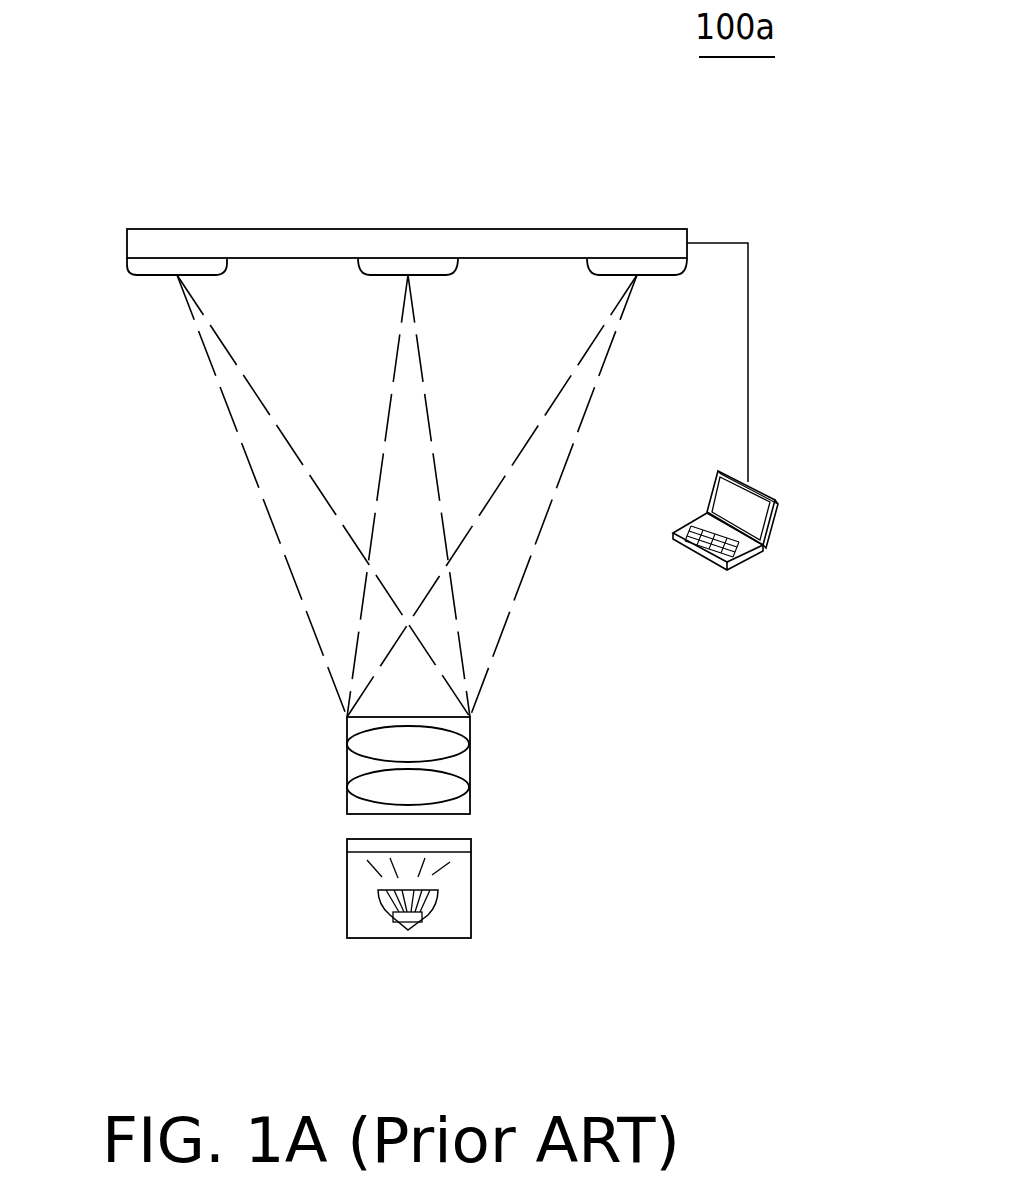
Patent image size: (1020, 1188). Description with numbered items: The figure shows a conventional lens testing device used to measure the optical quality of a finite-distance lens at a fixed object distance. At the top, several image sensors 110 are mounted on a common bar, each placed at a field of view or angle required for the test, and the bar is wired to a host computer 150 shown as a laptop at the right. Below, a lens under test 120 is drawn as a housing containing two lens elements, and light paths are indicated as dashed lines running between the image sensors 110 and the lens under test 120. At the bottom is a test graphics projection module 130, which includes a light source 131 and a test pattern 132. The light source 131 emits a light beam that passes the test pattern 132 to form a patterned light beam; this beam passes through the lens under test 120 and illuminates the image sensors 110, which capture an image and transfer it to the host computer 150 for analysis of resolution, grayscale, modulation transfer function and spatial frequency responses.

The image sensor 110 is at (178, 270).
The lens under test 120 is at (470, 763).
The test graphics projection module 130 is at (423, 882).
The light source 131 is at (378, 890).
The test pattern 132 is at (347, 841).
The host computer 150 is at (697, 545).